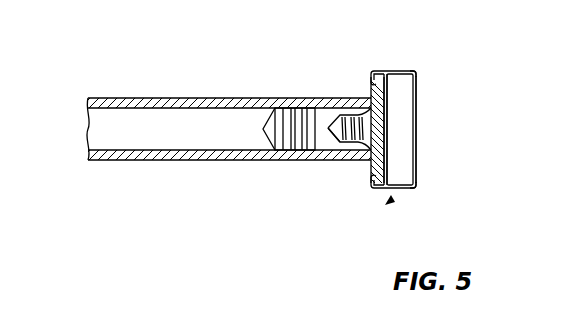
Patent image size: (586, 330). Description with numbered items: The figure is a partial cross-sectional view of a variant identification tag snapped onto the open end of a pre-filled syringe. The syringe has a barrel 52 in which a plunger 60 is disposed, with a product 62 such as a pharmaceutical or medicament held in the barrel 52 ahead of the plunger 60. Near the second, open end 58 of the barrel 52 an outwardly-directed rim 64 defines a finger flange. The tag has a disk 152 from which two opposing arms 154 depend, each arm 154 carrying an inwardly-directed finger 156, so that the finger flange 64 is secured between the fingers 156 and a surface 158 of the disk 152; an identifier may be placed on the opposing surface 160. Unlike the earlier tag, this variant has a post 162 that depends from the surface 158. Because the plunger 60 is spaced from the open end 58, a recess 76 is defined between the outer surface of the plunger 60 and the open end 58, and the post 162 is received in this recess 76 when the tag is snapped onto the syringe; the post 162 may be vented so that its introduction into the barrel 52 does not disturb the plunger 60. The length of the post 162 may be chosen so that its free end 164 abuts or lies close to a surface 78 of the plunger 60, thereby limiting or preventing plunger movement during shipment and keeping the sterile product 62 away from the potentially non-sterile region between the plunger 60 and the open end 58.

The barrel 52 is at (190, 158).
The product 62 is at (158, 127).
The plunger 60 is at (292, 98).
The surface of the plunger 78 is at (330, 136).
The recess 76 is at (325, 140).
The post 162 is at (369, 99).
The free end of the post 164 is at (344, 157).
The rim 64 is at (386, 72).
The disk 152 is at (405, 123).
The surface of the disk 158 is at (388, 91).
The opposing surface 160 is at (418, 153).
The arm 154 is at (414, 73).
The finger 156 is at (371, 72).
The second, open end 58 is at (389, 201).